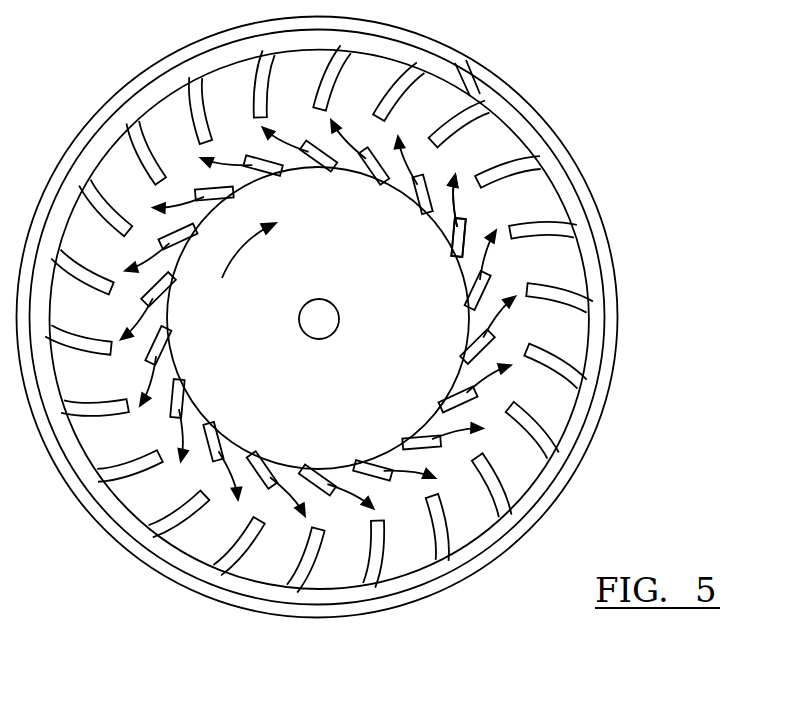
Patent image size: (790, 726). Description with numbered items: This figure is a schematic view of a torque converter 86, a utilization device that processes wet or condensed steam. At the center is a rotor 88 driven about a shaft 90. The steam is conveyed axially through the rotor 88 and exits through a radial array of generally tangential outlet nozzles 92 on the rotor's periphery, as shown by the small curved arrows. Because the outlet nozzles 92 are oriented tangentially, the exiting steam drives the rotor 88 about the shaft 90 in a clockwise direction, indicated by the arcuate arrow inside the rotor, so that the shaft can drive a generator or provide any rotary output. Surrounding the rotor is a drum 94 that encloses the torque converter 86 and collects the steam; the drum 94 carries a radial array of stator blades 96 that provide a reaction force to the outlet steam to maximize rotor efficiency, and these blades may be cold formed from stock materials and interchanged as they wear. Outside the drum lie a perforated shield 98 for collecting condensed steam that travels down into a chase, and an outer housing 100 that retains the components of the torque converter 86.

The torque converter 86 is at (583, 87).
The rotor 88 is at (425, 318).
The shaft 90 is at (356, 313).
The outlet nozzles 92 is at (535, 200).
The drum 94 is at (418, 572).
The stator blades 96 is at (598, 363).
The perforated shield 98 is at (593, 418).
The outer housing 100 is at (573, 478).